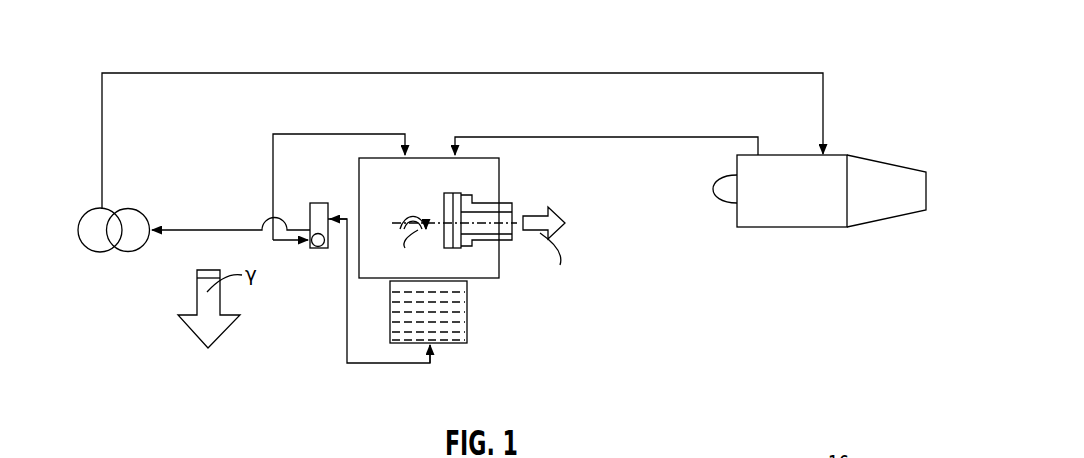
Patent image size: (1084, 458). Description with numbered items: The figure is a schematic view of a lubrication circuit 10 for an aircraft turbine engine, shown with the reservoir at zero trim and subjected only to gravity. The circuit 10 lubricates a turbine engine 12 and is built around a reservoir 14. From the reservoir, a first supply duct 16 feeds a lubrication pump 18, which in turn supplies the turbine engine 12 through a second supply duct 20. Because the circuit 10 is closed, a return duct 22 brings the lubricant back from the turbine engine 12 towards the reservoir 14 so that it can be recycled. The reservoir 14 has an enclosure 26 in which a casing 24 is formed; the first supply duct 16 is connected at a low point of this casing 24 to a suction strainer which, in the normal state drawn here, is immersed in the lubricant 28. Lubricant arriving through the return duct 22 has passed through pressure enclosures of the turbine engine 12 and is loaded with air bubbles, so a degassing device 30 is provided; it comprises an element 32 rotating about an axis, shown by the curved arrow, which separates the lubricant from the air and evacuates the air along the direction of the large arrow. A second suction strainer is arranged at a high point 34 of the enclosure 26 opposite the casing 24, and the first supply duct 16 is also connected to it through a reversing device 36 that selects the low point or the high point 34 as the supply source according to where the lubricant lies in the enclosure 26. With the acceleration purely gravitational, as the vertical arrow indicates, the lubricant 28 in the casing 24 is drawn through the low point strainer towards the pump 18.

The lubrication circuit 10 is at (783, 31).
The turbine engine 12 is at (820, 218).
The reservoir 14 is at (480, 221).
The first supply duct 16 is at (175, 237).
The lubrication pump 18 is at (129, 207).
The second supply duct 20 is at (621, 73).
The return duct 22 is at (683, 137).
The casing 24 is at (462, 323).
The enclosure 26 is at (358, 187).
The lubricant 28 is at (430, 322).
The degassing device 30 is at (486, 199).
The rotating element 32 is at (488, 242).
The high point 34 is at (409, 156).
The reversing device 36 is at (318, 250).